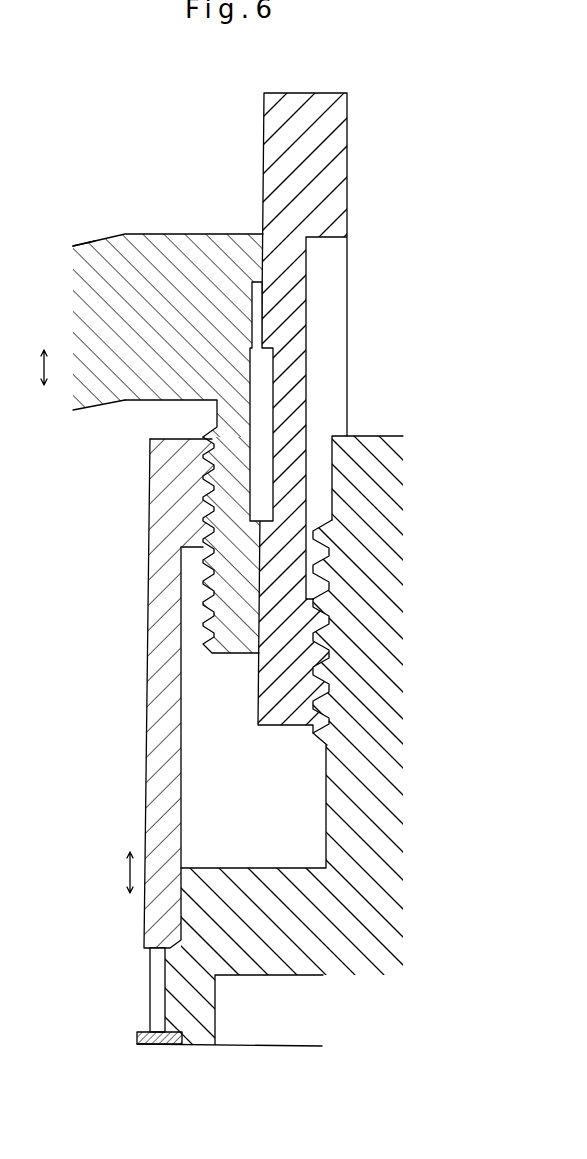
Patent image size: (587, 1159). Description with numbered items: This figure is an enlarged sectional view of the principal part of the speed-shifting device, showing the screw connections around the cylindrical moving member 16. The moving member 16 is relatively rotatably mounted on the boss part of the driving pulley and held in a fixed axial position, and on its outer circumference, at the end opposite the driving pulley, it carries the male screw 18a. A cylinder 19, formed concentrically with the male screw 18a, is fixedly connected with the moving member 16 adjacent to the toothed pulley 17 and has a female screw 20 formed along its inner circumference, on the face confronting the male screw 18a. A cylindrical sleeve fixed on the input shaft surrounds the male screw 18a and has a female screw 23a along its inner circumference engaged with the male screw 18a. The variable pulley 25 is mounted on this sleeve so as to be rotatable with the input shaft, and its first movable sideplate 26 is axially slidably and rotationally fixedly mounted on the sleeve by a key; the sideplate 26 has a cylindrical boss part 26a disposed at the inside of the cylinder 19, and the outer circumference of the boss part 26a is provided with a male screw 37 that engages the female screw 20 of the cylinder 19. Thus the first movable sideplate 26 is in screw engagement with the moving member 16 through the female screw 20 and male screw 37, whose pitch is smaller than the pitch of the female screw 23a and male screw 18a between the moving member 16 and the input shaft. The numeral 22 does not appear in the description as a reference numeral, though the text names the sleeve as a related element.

The rod 22 is at (265, 106).
The variable pulley 25 is at (92, 239).
The first movable sideplate 26 is at (140, 232).
The boss part 26a is at (206, 607).
The female screw 20 is at (206, 509).
The male screw 37 is at (208, 511).
The cylinder 19 is at (142, 692).
The male screw 18a is at (318, 667).
The female screw 23a is at (313, 685).
The toothed pulley 17 is at (150, 1003).
The moving member 16 is at (190, 1048).